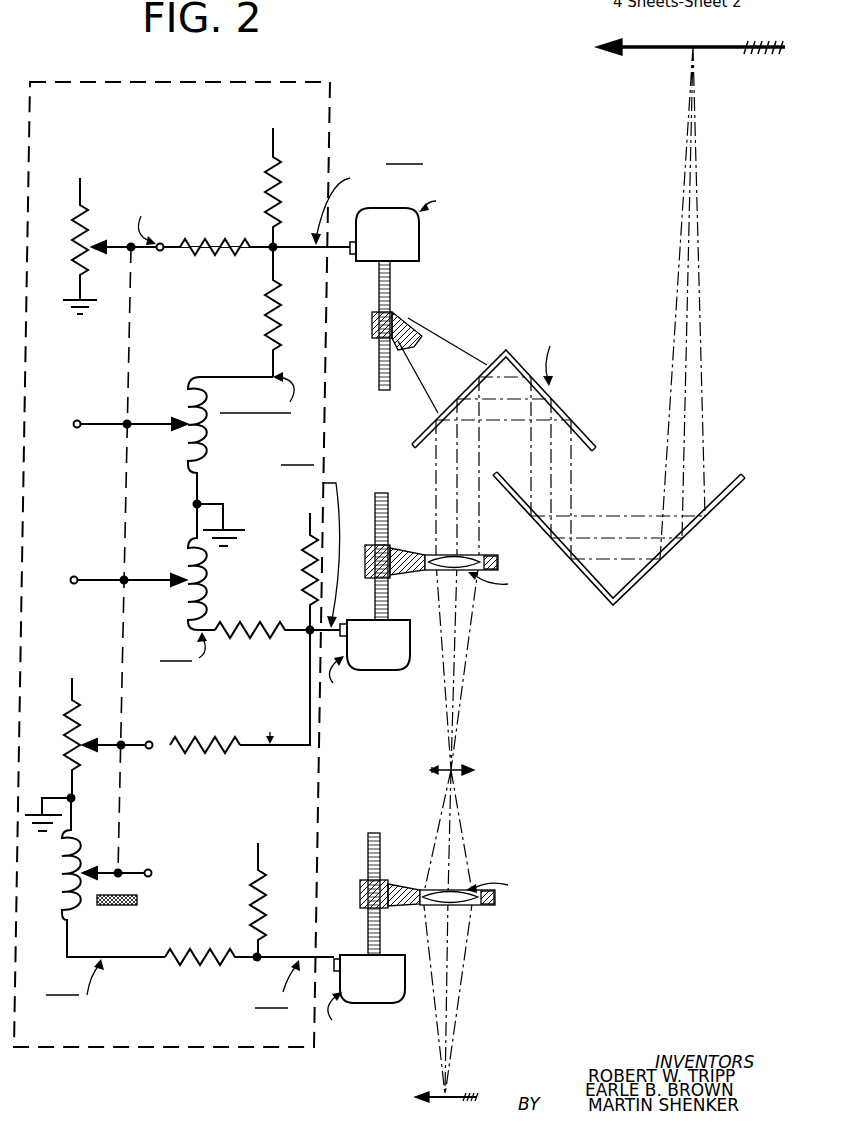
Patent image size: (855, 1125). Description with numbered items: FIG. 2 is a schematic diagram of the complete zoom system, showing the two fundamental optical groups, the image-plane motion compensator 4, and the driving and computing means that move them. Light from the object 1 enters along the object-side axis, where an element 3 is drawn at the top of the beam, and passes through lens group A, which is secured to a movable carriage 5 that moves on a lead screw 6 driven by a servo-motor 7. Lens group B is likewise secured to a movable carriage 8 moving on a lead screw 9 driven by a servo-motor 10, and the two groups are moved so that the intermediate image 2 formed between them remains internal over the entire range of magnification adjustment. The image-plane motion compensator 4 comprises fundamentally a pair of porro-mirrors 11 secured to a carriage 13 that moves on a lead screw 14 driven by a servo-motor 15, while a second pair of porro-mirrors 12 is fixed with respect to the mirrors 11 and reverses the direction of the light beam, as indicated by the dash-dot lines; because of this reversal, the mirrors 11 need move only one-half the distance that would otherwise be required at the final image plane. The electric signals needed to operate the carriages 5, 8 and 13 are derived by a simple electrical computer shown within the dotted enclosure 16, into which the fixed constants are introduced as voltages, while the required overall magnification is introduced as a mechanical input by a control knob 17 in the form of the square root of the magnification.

The object 1 is at (455, 1079).
The intermediate image 2 is at (458, 772).
The object plane 3 is at (660, 44).
The image-plane motion compensator 4 is at (592, 417).
The movable carriage 5 is at (412, 888).
The lead screw 6 is at (368, 862).
The servo-motor 7 is at (352, 957).
The movable carriage 8 is at (414, 548).
The lead screw 9 is at (388, 506).
The servo-motor 10 is at (358, 621).
The porro-mirrors 11 is at (420, 431).
The porro-mirrors 12 is at (672, 554).
The carriage 13 is at (426, 330).
The lead screw 14 is at (378, 279).
The servo-motor 15 is at (373, 212).
The dotted enclosure 16 is at (117, 82).
The control knob 17 is at (139, 900).